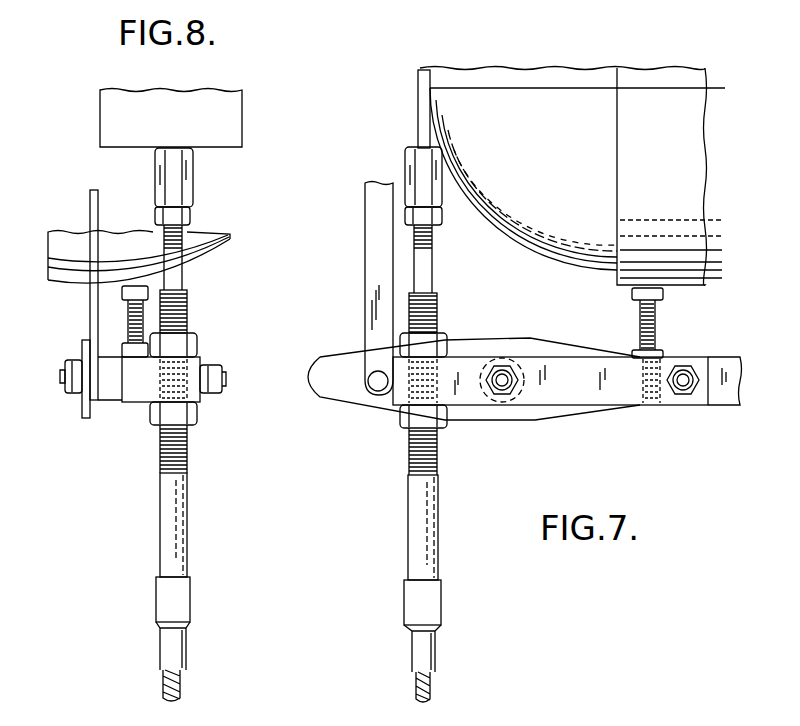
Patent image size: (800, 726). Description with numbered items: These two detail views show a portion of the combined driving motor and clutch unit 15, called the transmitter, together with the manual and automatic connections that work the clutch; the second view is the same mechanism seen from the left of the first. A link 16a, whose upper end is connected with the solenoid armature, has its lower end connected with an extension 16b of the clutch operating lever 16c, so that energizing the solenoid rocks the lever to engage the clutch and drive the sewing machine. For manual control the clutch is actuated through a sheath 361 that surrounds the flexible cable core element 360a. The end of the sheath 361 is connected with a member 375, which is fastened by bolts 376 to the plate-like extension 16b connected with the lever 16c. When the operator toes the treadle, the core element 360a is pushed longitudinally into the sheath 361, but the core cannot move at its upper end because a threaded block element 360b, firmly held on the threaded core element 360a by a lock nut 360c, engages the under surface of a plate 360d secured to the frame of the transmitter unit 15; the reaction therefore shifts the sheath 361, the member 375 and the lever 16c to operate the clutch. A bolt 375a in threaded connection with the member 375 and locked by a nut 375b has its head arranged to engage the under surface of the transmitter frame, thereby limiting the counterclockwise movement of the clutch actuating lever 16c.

In FIG. 7, the combined driving motor and clutch unit 15 is at (680, 141).
In FIG. 8, the link 16a is at (92, 320).
In FIG. 7, the link 16a is at (370, 278).
In FIG. 8, the extension of clutch operating lever 16b is at (83, 410).
In FIG. 7, the extension of clutch operating lever 16b is at (323, 393).
In FIG. 7, the clutch operating lever 16c is at (732, 400).
In FIG. 8, the flexible cable core element 360a is at (168, 688).
In FIG. 7, the flexible cable core element 360a is at (432, 684).
In FIG. 8, the threaded block element 360b is at (193, 175).
In FIG. 7, the threaded block element 360b is at (405, 162).
In FIG. 8, the lock nut 360c is at (190, 216).
In FIG. 8, the plate 360d is at (234, 116).
In FIG. 7, the plate 360d is at (420, 122).
In FIG. 8, the sheath 361 is at (165, 505).
In FIG. 7, the sheath 361 is at (415, 518).
In FIG. 8, the member 375 is at (143, 402).
In FIG. 7, the member 375 is at (568, 365).
In FIG. 8, the bolt 375a is at (130, 310).
In FIG. 7, the bolt 375a is at (652, 318).
In FIG. 8, the nut 375b is at (137, 357).
In FIG. 7, the nut 375b is at (664, 353).
In FIG. 8, the bolts 376 is at (218, 377).
In FIG. 7, the bolts 376 is at (683, 392).